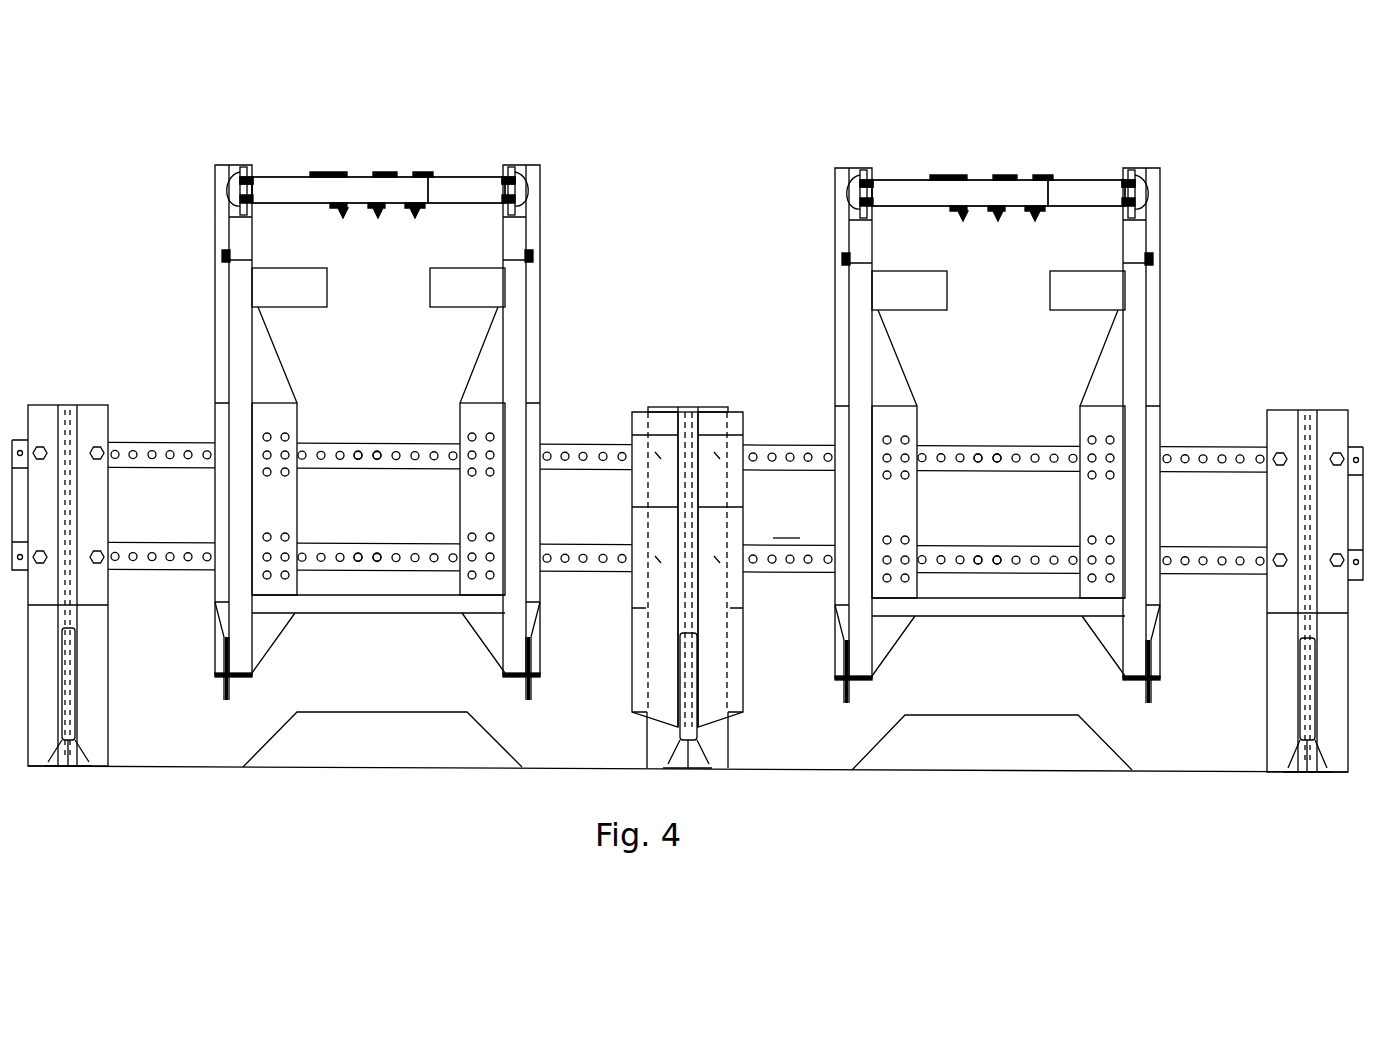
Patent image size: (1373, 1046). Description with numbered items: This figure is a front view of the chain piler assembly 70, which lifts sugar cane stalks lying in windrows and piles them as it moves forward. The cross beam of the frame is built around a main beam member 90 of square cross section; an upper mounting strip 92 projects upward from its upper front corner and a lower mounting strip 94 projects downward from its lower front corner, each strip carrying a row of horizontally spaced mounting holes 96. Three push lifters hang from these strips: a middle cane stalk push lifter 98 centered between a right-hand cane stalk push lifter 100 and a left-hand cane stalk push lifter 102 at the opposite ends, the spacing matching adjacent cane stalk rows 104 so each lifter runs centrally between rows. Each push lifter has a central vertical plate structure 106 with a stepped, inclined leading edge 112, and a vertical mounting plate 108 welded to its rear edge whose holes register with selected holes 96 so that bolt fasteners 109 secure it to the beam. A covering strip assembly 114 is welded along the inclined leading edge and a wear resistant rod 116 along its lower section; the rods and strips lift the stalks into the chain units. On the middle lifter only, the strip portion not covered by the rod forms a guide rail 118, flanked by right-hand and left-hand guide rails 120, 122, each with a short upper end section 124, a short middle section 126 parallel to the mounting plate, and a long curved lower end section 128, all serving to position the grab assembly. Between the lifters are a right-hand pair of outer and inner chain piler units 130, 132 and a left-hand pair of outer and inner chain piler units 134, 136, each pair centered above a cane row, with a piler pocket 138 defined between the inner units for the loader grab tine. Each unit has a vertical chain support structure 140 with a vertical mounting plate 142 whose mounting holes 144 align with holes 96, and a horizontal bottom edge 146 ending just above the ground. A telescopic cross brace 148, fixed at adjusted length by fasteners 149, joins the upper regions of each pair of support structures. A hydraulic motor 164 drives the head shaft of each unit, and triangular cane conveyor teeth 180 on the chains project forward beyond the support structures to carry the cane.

The chain piler assembly 70 is at (995, 122).
The main beam member 90 is at (786, 526).
The upper mounting strip 92 is at (585, 442).
The lower mounting strip 94 is at (576, 572).
The mounting holes 96 is at (377, 553).
The middle cane stalk push lifter 98 is at (738, 733).
The right-hand cane stalk push lifter 100 is at (112, 712).
The left-hand cane stalk push lifter 102 is at (1262, 715).
The cane stalk rows 104 is at (395, 712).
The vertical plate structure 106 is at (45, 405).
The vertical mounting plate 108 is at (90, 405).
The bolt fasteners 109 is at (98, 550).
The upper cross bar 112 is at (463, 168).
The covering strip assembly 114 is at (462, 205).
The wear resistant rod 116 is at (296, 205).
The guide rail 118 is at (685, 402).
The right-hand guide rail 120 is at (628, 683).
The left-hand guide rail 122 is at (1083, 178).
The upper end section 124 is at (632, 415).
The middle section 126 is at (640, 488).
The lower end section 128 is at (742, 672).
The right-hand outer chain piler unit 130 is at (212, 290).
The right-hand inner chain piler unit 132 is at (560, 290).
The left-hand outer chain piler unit 134 is at (1180, 290).
The left-hand inner chain piler unit 136 is at (832, 290).
The piler pocket 138 is at (750, 178).
The vertical chain support structure 140 is at (252, 350).
The vertical mounting plate 142 is at (452, 408).
The mounting holes 144 is at (469, 437).
The horizontal bottom edge 146 is at (250, 678).
The telescopic cross brace 148 is at (290, 168).
The fasteners 149 is at (343, 218).
The hydraulic motor 164 is at (430, 290).
The cane conveyor teeth 180 is at (216, 230).